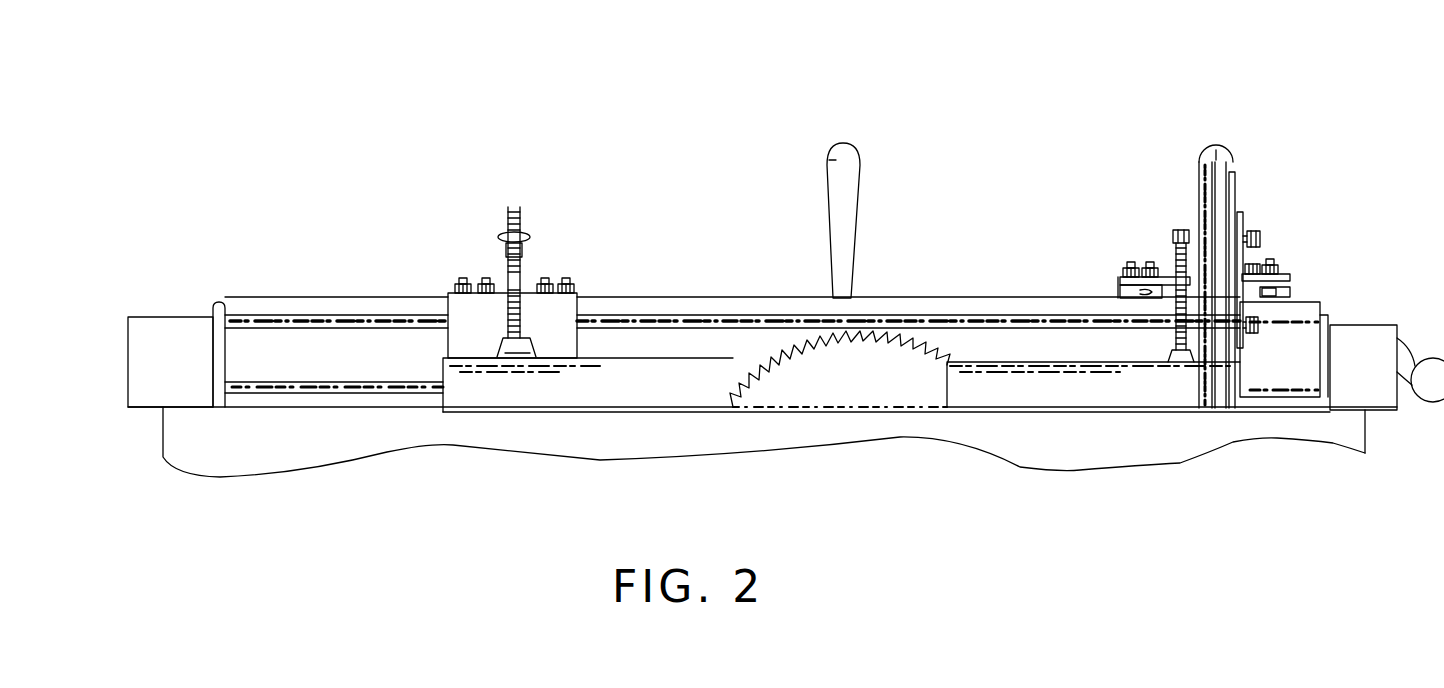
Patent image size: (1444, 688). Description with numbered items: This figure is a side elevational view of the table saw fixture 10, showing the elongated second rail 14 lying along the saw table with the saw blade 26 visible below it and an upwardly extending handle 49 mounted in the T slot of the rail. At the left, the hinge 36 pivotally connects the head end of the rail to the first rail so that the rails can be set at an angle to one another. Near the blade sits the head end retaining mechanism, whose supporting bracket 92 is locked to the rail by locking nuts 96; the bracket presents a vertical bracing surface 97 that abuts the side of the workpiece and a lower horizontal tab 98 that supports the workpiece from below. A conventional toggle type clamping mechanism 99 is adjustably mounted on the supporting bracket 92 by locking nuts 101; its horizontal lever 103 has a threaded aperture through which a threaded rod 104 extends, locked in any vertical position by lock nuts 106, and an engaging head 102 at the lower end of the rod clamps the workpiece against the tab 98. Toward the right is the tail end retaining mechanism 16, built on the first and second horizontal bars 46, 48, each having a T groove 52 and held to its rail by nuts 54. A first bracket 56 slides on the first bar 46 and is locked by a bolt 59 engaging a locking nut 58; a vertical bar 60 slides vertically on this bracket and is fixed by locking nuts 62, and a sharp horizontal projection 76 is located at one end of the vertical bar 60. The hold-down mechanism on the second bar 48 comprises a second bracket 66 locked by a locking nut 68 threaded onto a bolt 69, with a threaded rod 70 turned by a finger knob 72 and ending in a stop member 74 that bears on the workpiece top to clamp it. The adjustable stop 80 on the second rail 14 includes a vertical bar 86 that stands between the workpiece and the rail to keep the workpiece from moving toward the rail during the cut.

The table saw fixture 10 is at (693, 165).
The second rail 14 is at (245, 285).
The tail end retaining mechanism 16 is at (1332, 177).
The blade 26 is at (793, 397).
The hinge 36 is at (217, 305).
The first horizontal bar 46 is at (1310, 308).
The second horizontal bar 48 is at (1128, 297).
The handle 49 is at (852, 157).
The T groove 52 is at (1285, 293).
The nut 54 is at (1130, 265).
The first bracket 56 is at (1283, 275).
The locking nut 58 is at (1277, 260).
The bolt 59 is at (1287, 283).
The vertical bar 60 is at (1237, 185).
The locking nut 62 is at (1258, 233).
The second bracket 66 is at (1118, 277).
The locking nut 68 is at (1147, 260).
The bolt 69 is at (1143, 288).
The threaded rod 70 is at (1175, 252).
The finger knob 72 is at (1182, 228).
The stop member 74 is at (1182, 363).
The sharp horizontal projection 76 is at (1222, 168).
The adjustable stop 80 is at (1222, 130).
The vertical bar 86 is at (1200, 160).
The supporting bracket 92 is at (455, 325).
The locking nut 96 is at (457, 280).
The vertical bracing surface 97 is at (512, 336).
The lower horizontal tab 98 is at (482, 408).
The toggle type clamping mechanism 99 is at (532, 178).
The locking nut 101 is at (480, 273).
The engaging head 102 is at (518, 358).
The horizontal lever 103 is at (522, 252).
The threaded rod 104 is at (510, 208).
The lock nut 106 is at (500, 240).